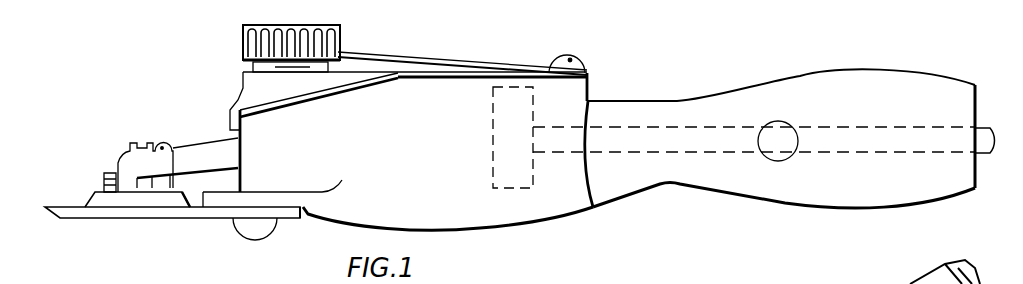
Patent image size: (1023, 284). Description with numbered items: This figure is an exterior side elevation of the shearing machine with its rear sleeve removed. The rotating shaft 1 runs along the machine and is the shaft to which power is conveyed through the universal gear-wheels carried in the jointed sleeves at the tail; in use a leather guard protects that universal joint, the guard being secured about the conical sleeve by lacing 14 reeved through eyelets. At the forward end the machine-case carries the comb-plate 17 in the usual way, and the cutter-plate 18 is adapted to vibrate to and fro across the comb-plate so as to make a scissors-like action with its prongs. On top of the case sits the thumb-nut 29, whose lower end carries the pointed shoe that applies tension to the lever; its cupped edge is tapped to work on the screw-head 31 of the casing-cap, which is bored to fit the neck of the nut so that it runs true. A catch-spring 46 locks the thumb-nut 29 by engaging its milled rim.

The rotating shaft 1 is at (988, 123).
The lacing 14 is at (811, 278).
The comb-plate 17 is at (185, 215).
The cutter-plate 18 is at (100, 202).
The thumb-nut 29 is at (340, 33).
The screw-head 31 is at (253, 67).
The catch-spring 46 is at (456, 60).